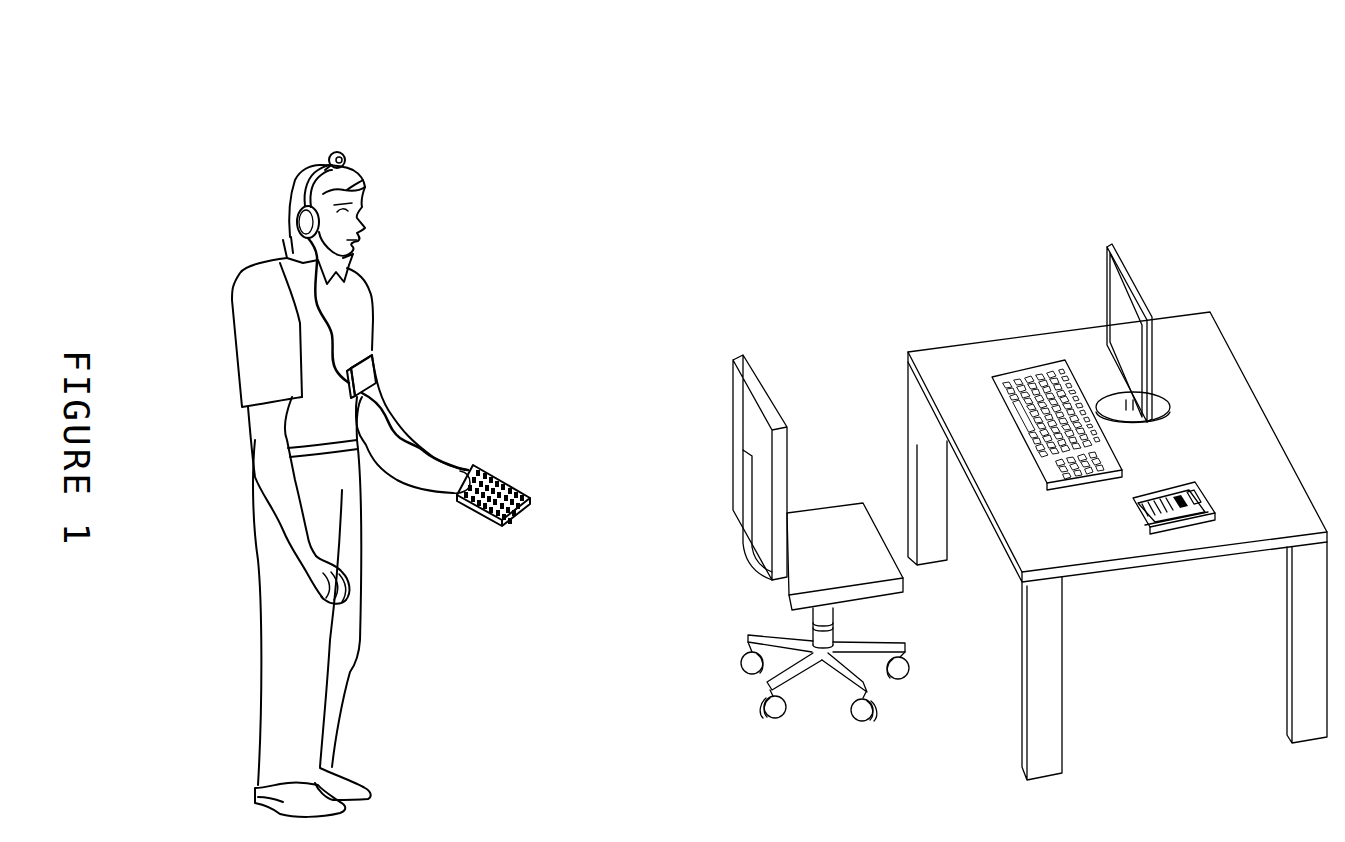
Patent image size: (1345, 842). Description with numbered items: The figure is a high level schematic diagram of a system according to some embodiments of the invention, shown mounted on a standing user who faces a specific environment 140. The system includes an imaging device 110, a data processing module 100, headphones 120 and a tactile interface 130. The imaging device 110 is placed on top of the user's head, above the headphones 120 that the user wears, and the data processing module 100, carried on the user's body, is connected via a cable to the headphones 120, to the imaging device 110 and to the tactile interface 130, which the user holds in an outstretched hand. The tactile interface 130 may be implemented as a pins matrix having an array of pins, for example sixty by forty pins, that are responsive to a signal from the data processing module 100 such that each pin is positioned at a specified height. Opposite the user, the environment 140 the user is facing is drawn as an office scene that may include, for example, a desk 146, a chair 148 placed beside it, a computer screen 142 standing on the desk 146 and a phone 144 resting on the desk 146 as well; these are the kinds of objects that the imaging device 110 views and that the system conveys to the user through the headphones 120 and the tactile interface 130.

The data processing module 100 is at (380, 363).
The imaging device 110 is at (345, 157).
The headphones 120 is at (292, 225).
The tactile interface 130 is at (507, 482).
The environment 140 is at (868, 200).
The computer screen 142 is at (1133, 280).
The phone 144 is at (1207, 488).
The desk 146 is at (1107, 548).
The chair 148 is at (738, 355).